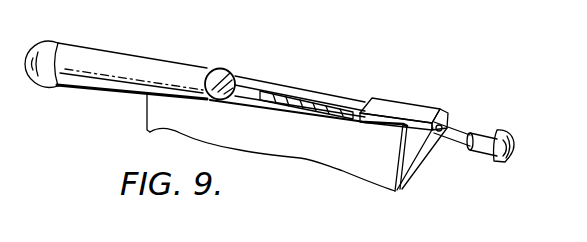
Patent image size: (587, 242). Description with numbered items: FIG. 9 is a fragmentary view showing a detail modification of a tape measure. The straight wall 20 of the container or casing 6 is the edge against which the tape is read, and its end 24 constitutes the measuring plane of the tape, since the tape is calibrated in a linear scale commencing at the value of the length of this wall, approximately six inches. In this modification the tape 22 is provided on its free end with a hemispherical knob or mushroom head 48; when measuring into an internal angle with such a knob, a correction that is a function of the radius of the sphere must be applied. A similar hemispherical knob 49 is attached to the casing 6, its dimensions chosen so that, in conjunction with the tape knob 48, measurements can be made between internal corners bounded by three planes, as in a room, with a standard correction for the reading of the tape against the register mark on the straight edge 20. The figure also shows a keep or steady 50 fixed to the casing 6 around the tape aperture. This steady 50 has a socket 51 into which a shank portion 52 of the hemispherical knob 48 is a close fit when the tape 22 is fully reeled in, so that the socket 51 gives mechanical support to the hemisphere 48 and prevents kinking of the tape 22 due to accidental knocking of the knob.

The casing 6 is at (336, 173).
The straight wall 20 is at (249, 95).
The tape 22 is at (449, 143).
The end of the wall 24 is at (147, 121).
The hemispherical knob 48 is at (507, 163).
The hemispherical knob on casing 49 is at (50, 44).
The steady 50 is at (387, 103).
The socket 51 is at (443, 124).
The shank portion 52 is at (485, 137).